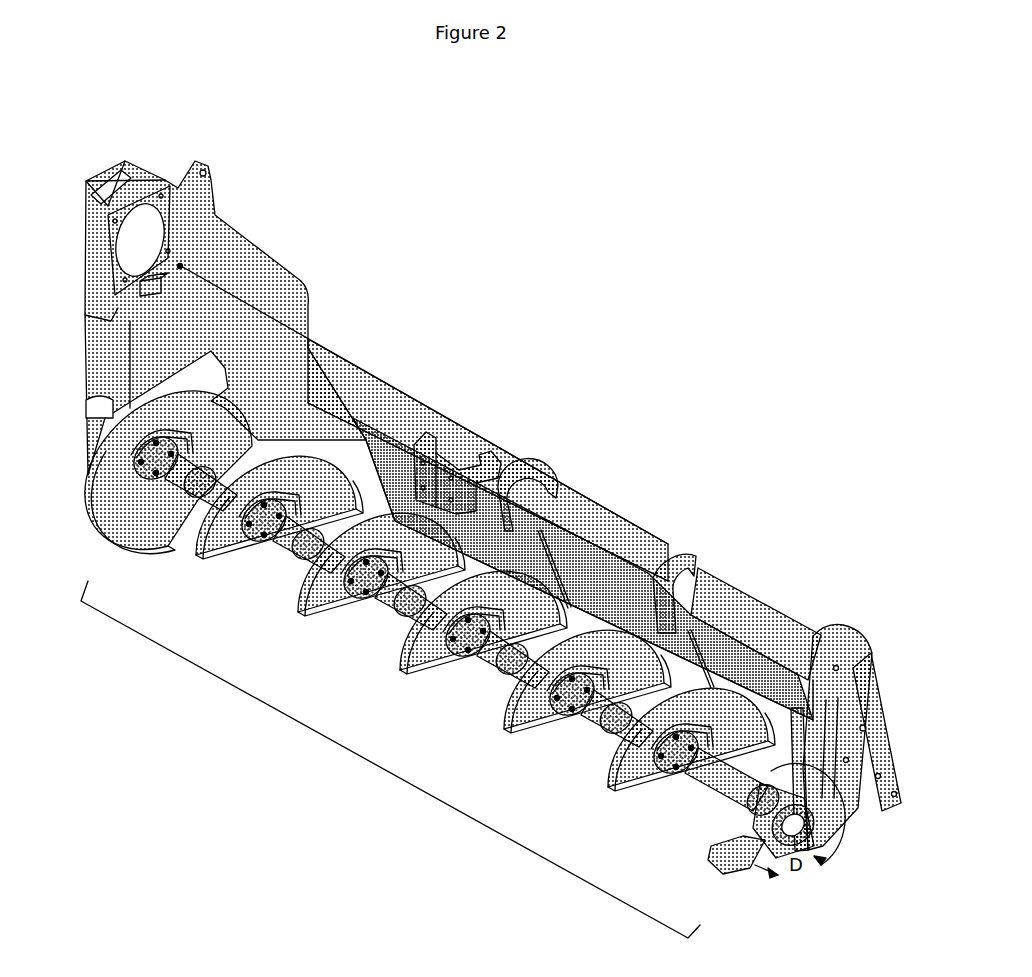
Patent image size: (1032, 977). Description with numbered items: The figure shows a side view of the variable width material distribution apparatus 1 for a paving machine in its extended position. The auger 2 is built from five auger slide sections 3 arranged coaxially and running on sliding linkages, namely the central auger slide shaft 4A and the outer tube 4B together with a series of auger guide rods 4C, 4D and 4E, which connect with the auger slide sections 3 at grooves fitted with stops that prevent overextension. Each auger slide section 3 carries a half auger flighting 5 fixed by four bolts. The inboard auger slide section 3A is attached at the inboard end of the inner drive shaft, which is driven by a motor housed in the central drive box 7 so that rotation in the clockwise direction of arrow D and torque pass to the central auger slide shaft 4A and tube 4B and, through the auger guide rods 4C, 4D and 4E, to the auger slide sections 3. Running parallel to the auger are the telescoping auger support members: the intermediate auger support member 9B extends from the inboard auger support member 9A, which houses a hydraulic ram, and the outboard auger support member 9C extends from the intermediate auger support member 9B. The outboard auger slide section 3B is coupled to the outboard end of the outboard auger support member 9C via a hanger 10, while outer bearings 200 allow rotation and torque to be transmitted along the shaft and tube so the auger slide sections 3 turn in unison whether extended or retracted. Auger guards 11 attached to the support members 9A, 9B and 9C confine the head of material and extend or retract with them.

The material distribution apparatus 1 is at (588, 272).
The auger 2 is at (343, 747).
The auger slide sections 3 is at (593, 745).
The inboard auger slide section 3A is at (122, 480).
The outboard auger slide section 3B is at (702, 810).
The central auger slide shaft 4A is at (378, 595).
The outer tube 4B is at (490, 660).
The auger guide rod 4C is at (248, 545).
The auger guide rod 4D is at (277, 560).
The auger guide rod 4E is at (267, 557).
The half auger flighting 5 is at (123, 497).
The central drive box 7 is at (227, 247).
The inboard auger support member 9A is at (402, 400).
The intermediate auger support member 9B is at (565, 510).
The outboard auger support member 9C is at (733, 595).
The hanger 10 is at (805, 788).
The auger guards 11 is at (835, 748).
The outer bearings 200 is at (787, 843).